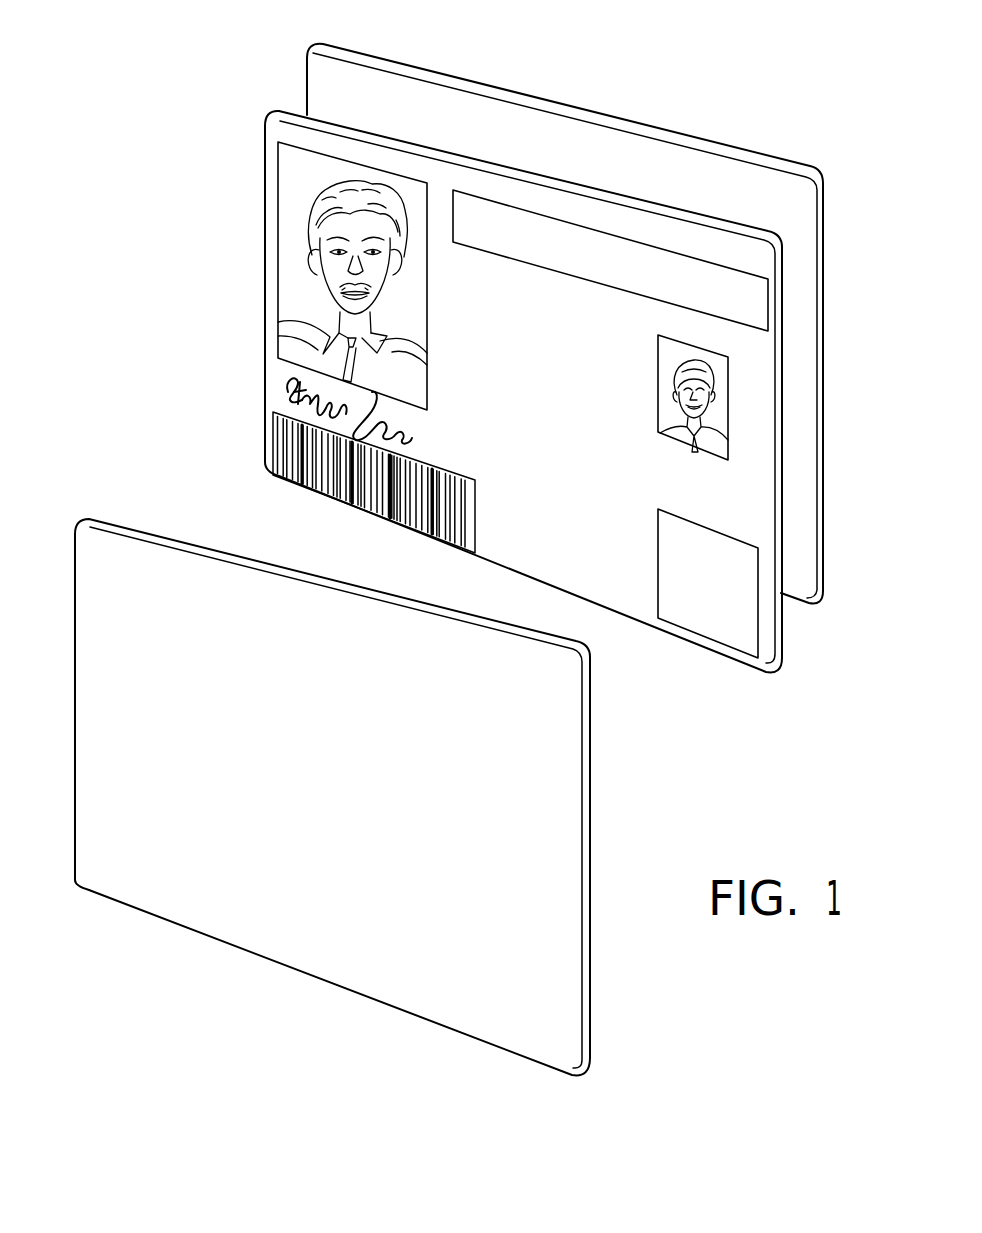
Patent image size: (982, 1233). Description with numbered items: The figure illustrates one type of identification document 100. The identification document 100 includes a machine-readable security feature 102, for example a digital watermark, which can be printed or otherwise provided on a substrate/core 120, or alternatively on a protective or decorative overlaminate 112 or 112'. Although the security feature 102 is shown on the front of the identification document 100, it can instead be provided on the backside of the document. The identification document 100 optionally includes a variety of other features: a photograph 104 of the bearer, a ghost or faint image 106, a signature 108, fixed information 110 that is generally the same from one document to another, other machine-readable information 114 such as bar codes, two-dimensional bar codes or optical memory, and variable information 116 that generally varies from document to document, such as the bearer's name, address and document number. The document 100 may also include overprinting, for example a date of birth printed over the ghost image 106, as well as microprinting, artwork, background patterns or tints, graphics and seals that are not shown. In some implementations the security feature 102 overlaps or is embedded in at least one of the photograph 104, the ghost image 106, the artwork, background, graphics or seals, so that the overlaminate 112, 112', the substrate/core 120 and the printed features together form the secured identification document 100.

The identification document 100 is at (172, 249).
The security feature 102 is at (728, 625).
The photograph 104 is at (288, 346).
The ghost or faint image 106 is at (665, 420).
The signature 108 is at (750, 314).
The fixed information 110 is at (290, 390).
The overlaminate 112 is at (415, 802).
The overlaminate 112' is at (565, 320).
The machine-readable information 114 is at (290, 465).
The variable information 116 is at (627, 467).
The substrate/core 120 is at (266, 138).